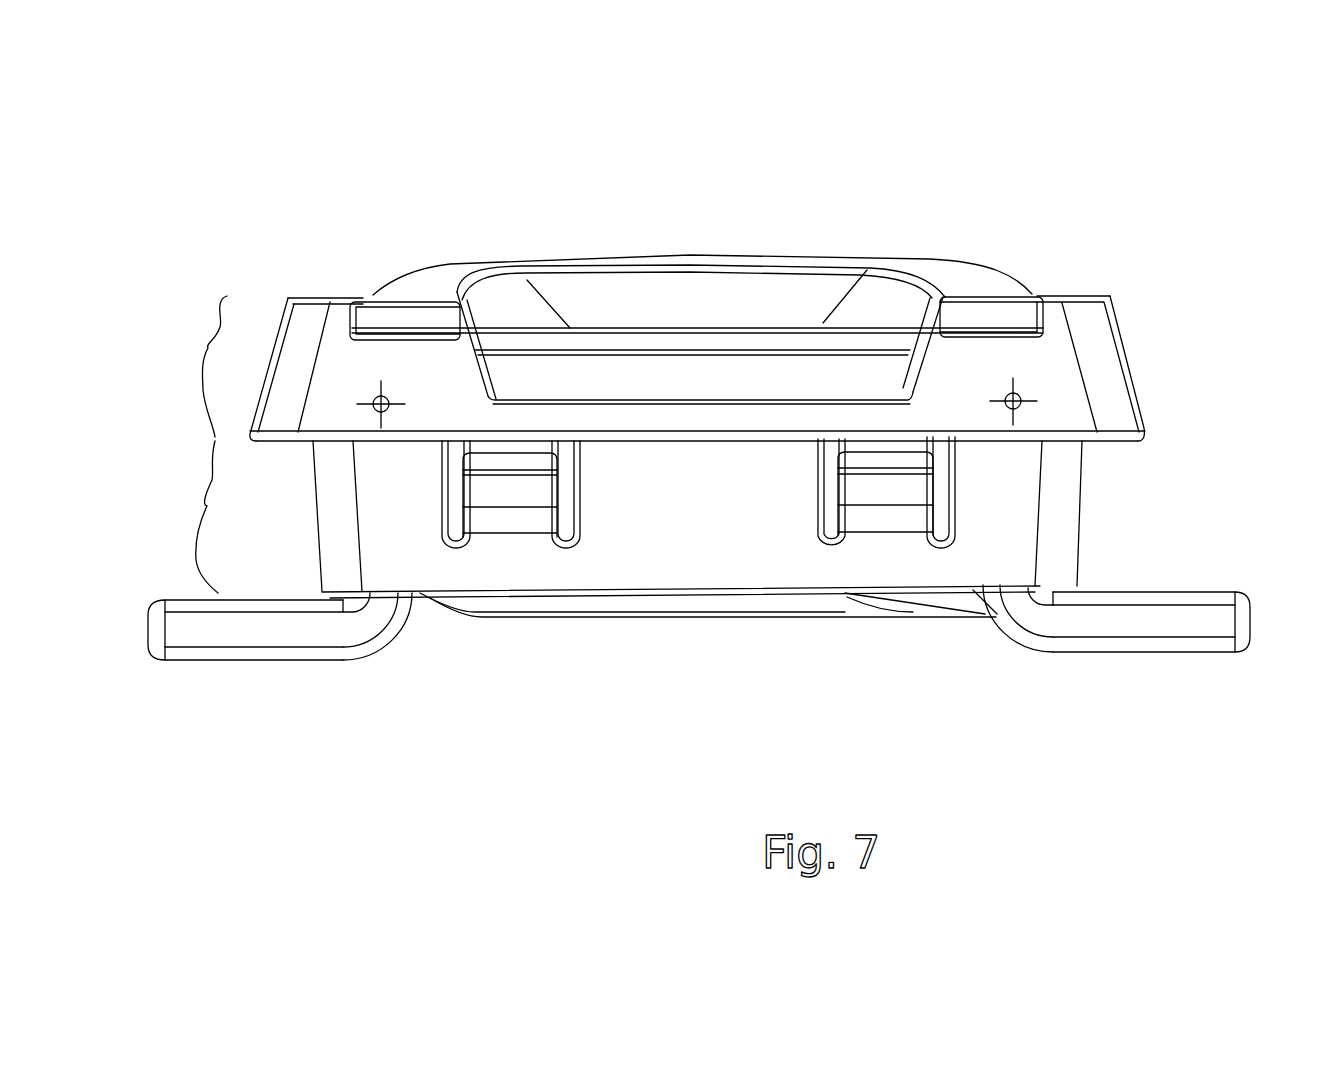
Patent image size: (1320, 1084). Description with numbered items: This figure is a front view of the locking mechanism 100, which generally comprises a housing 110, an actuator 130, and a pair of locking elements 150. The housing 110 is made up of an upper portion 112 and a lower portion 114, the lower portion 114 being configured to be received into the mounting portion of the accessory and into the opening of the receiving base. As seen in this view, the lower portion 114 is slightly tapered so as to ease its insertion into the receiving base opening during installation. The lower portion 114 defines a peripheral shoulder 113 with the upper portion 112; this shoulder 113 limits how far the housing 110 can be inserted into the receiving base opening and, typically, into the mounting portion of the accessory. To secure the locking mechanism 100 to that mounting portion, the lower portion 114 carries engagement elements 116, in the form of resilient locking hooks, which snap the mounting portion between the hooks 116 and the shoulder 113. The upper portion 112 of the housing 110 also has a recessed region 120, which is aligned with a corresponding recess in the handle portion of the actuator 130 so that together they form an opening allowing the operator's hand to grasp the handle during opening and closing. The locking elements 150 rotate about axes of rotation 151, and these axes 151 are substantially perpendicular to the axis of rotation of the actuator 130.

The locking mechanism 100 is at (1182, 160).
The housing 110 is at (1123, 412).
The upper portion 112 is at (192, 348).
The peripheral shoulder 113 is at (1093, 442).
The lower portion 114 is at (194, 505).
The engagement elements 116 is at (676, 305).
The recessed region 120 is at (648, 385).
The actuator 130 is at (958, 275).
The locking elements 150 is at (1205, 580).
The axes of rotation 151 is at (376, 389).